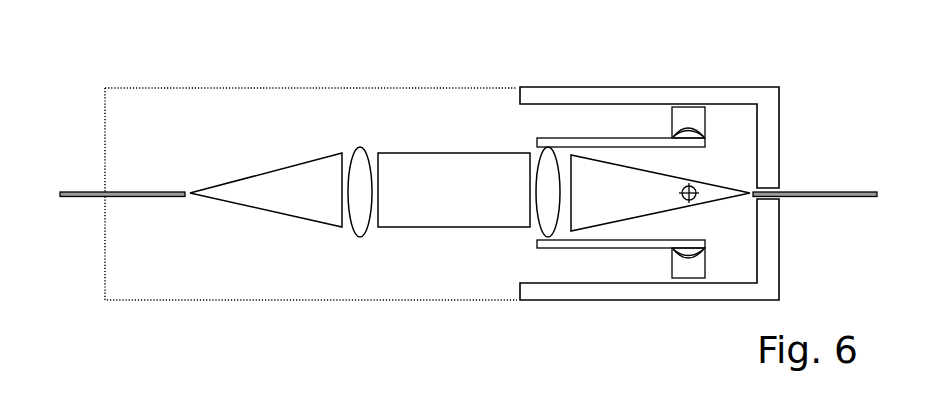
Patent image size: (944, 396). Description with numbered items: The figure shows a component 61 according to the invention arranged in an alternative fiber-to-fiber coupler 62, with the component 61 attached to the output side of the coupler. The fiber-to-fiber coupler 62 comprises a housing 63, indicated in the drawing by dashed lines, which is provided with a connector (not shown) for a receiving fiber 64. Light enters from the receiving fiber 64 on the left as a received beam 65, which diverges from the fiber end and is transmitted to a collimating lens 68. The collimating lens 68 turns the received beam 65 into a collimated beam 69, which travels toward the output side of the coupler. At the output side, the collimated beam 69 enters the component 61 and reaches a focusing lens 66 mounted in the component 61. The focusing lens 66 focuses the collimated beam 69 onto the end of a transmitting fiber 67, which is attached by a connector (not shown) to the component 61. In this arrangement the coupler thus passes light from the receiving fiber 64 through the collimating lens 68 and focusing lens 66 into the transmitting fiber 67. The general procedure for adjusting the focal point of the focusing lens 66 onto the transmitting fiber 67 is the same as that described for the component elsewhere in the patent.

The component 61 is at (649, 171).
The fiber-to-fiber coupler 62 is at (311, 166).
The housing 63 is at (291, 69).
The receiving fiber 64 is at (101, 214).
The received beam 65 is at (278, 214).
The focusing lens 66 is at (536, 232).
The transmitting fiber 67 is at (815, 212).
The collimating lens 68 is at (355, 233).
The collimated beam 69 is at (463, 227).